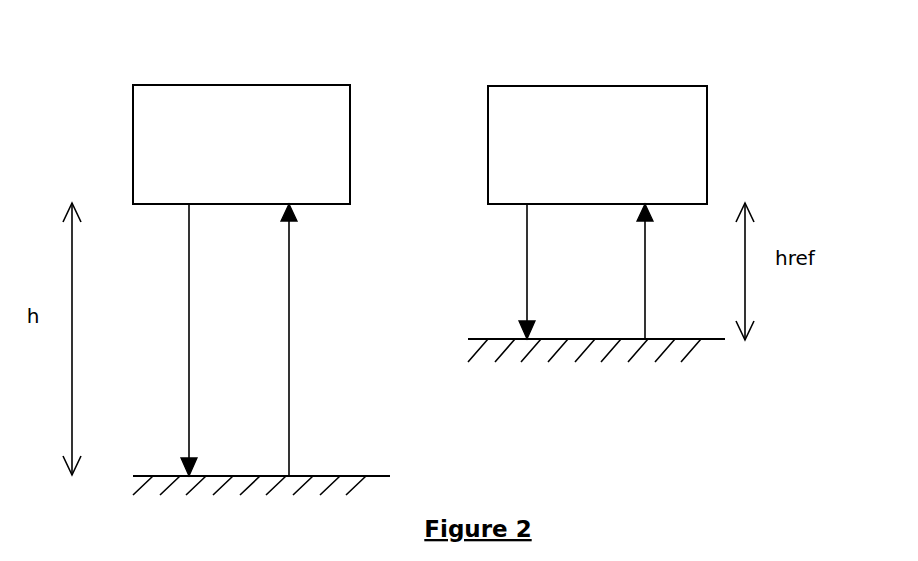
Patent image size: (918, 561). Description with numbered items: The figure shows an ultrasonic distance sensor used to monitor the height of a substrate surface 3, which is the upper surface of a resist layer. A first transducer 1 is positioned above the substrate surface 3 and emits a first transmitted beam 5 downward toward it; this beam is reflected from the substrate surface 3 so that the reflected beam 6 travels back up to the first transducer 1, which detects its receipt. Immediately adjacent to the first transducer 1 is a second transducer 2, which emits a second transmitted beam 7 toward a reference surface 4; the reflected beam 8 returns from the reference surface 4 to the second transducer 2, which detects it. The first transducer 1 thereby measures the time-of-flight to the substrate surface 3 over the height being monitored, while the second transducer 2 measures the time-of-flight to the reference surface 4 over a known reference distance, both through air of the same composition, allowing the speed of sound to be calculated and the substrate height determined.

The first transducer 1 is at (229, 105).
The second transducer 2 is at (604, 105).
The substrate surface 3 is at (368, 476).
The reference surface 4 is at (705, 339).
The first transmitted beam 5 is at (189, 320).
The reflected beam from substrate surface 6 is at (289, 338).
The second transmitted beam 7 is at (527, 263).
The reflected beam from reference surface 8 is at (645, 280).